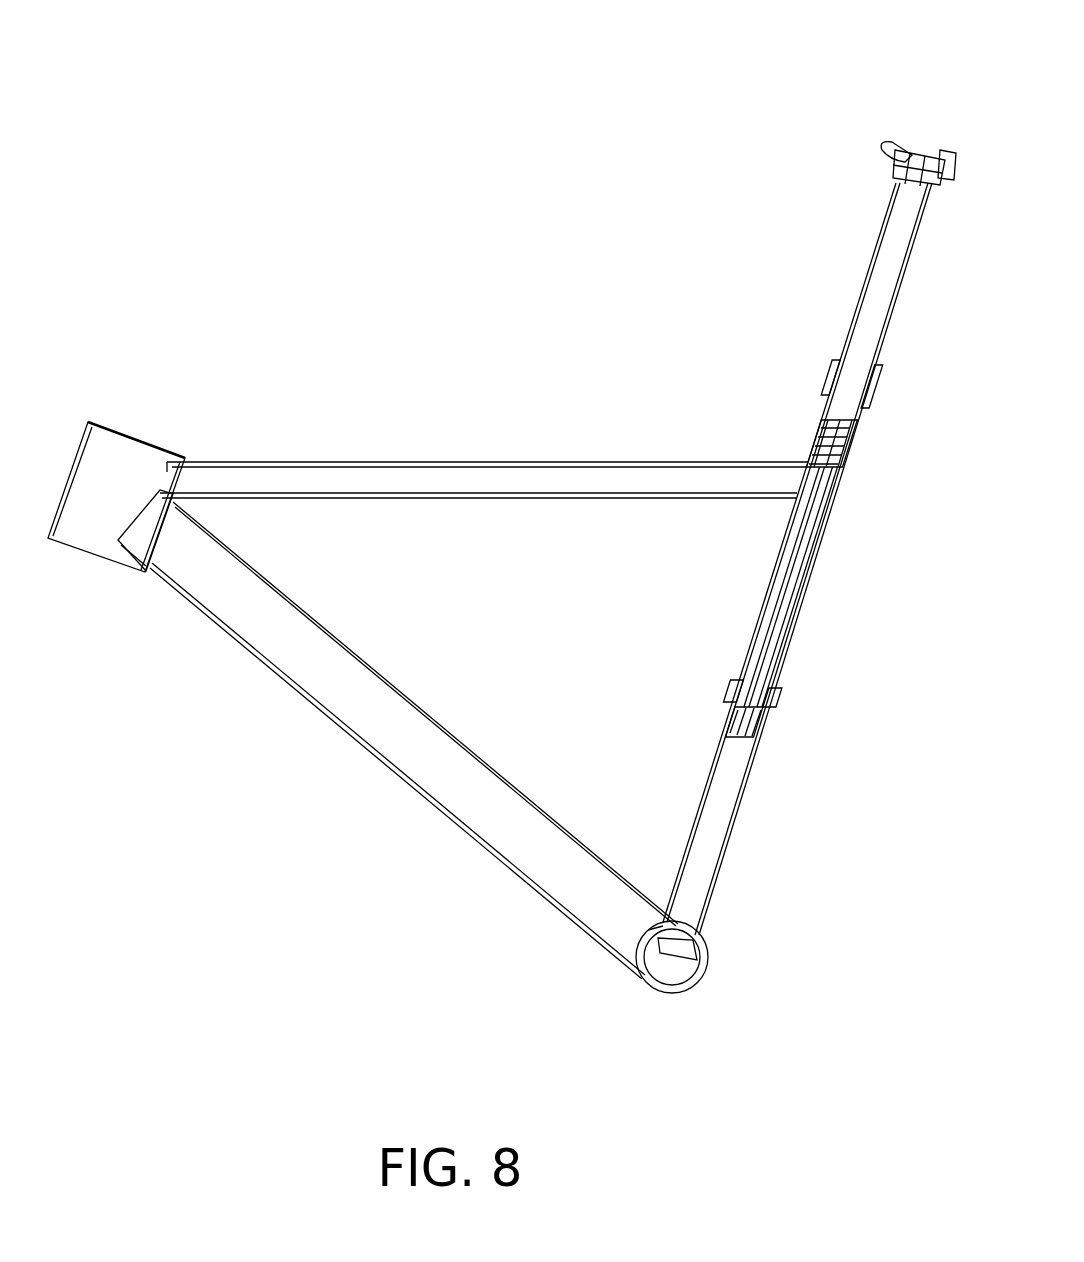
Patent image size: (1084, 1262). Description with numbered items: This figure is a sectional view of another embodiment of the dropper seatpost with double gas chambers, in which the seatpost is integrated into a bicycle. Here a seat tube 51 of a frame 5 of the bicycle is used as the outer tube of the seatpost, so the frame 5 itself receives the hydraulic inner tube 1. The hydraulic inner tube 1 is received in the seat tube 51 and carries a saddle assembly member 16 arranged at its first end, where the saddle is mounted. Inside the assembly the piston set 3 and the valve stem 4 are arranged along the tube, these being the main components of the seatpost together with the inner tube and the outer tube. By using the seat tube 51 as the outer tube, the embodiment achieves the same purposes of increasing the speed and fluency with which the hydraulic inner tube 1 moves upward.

The saddle assembly member 16 is at (913, 148).
The hydraulic inner tube 1 is at (868, 263).
The valve stem 4 is at (812, 468).
The piston set 3 is at (806, 543).
The seat tube 51 is at (813, 583).
The frame 5 is at (408, 788).